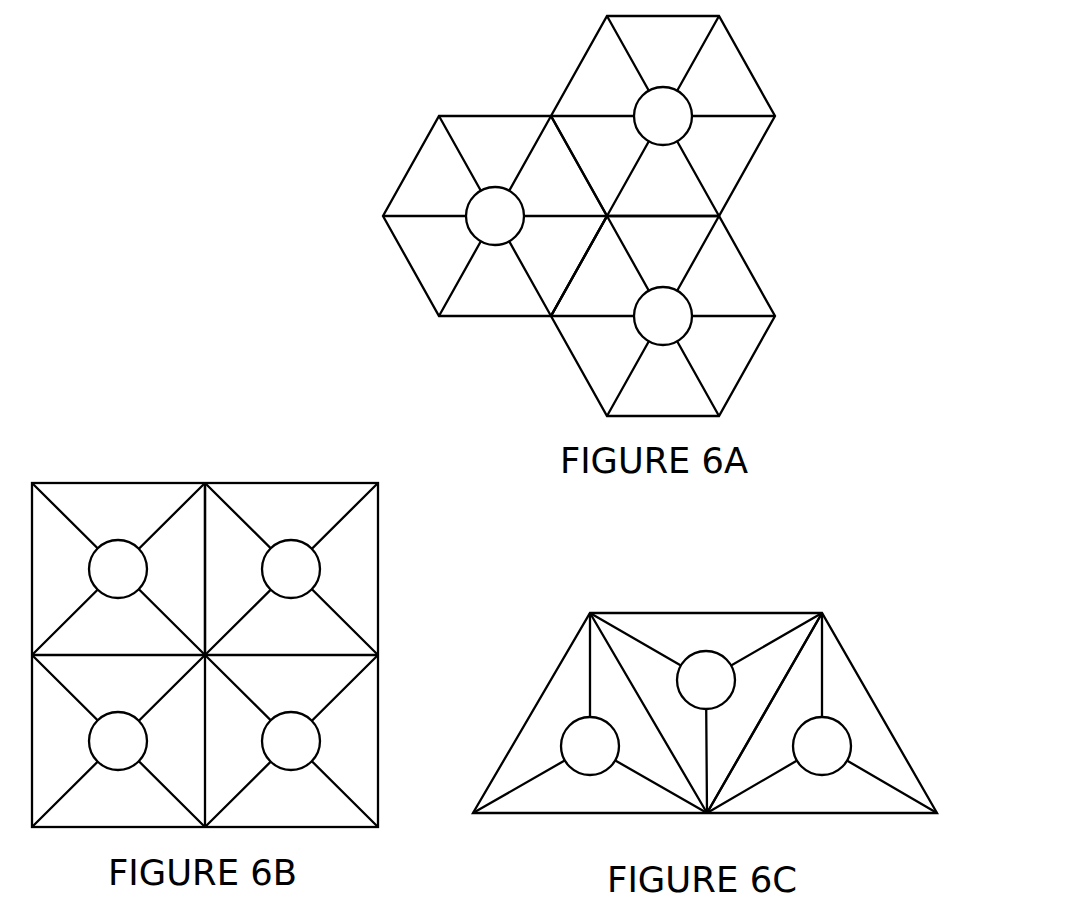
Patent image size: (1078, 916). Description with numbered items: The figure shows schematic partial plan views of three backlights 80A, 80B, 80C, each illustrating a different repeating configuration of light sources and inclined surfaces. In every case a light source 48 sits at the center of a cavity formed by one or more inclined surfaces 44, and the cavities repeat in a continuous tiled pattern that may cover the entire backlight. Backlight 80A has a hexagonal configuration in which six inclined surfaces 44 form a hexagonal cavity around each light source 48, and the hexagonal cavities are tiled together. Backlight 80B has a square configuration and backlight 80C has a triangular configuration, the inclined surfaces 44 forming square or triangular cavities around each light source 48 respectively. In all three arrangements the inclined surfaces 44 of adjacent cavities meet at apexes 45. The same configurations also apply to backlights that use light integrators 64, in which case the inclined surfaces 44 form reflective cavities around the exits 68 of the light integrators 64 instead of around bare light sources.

In FIG. 6A, the inclined surface 44 is at (726, 73).
In FIG. 6B, the inclined surface 44 is at (112, 497).
In FIG. 6C, the inclined surface 44 is at (572, 686).
In FIG. 6A, the apex 45 is at (582, 257).
In FIG. 6B, the apex 45 is at (207, 543).
In FIG. 6C, the apex 45 is at (788, 672).
In FIG. 6A, the light source 48 is at (689, 242).
In FIG. 6B, the light source 48 is at (308, 587).
In FIG. 6C, the light source 48 is at (702, 673).
In FIG. 6A, the light integrator 64 is at (689, 242).
In FIG. 6B, the light integrator 64 is at (308, 587).
In FIG. 6C, the light integrator 64 is at (702, 673).
In FIG. 6A, the exit 68 is at (667, 116).
In FIG. 6B, the exit 68 is at (121, 560).
In FIG. 6C, the exit 68 is at (707, 668).
In FIG. 6A, the backlight 80A is at (625, 215).
In FIG. 6B, the backlight 80B is at (276, 579).
In FIG. 6C, the backlight 80C is at (706, 673).